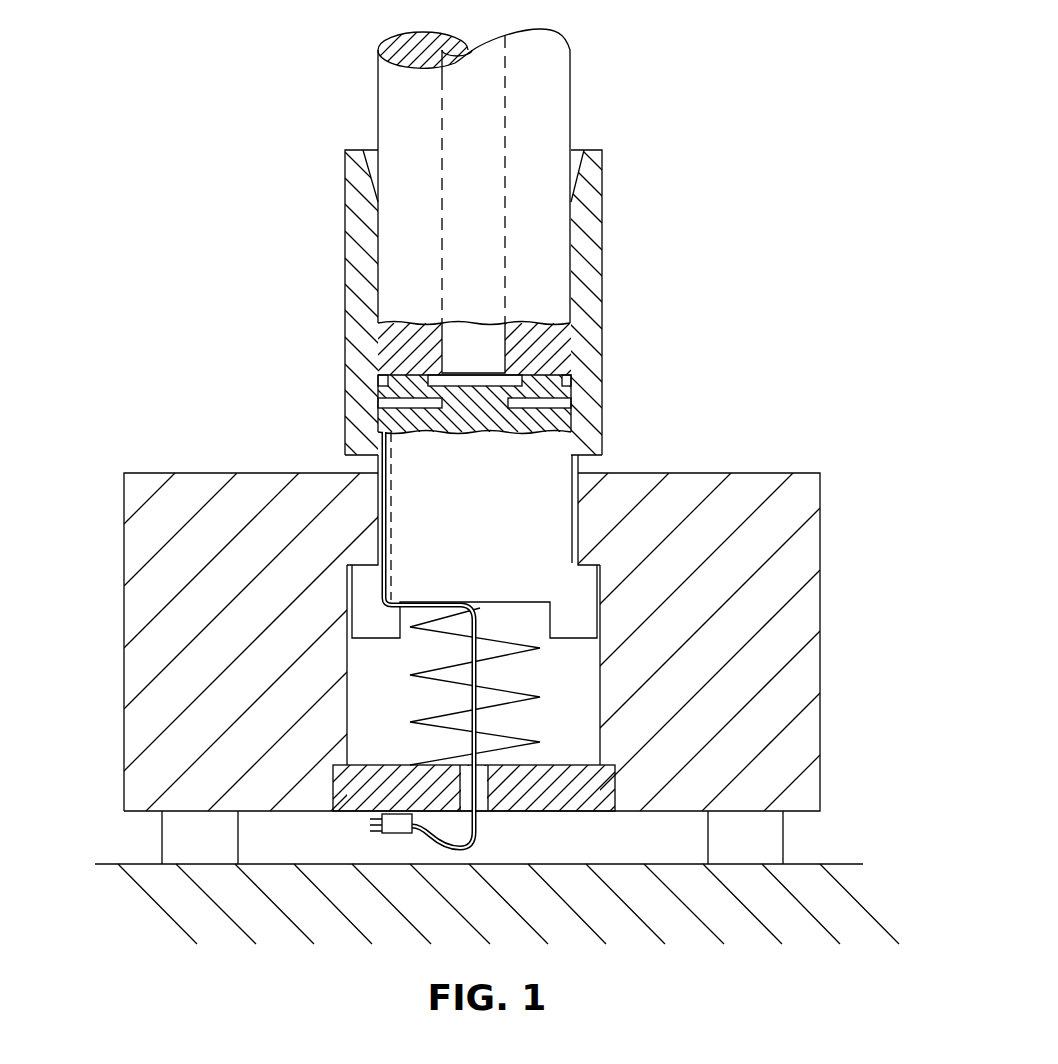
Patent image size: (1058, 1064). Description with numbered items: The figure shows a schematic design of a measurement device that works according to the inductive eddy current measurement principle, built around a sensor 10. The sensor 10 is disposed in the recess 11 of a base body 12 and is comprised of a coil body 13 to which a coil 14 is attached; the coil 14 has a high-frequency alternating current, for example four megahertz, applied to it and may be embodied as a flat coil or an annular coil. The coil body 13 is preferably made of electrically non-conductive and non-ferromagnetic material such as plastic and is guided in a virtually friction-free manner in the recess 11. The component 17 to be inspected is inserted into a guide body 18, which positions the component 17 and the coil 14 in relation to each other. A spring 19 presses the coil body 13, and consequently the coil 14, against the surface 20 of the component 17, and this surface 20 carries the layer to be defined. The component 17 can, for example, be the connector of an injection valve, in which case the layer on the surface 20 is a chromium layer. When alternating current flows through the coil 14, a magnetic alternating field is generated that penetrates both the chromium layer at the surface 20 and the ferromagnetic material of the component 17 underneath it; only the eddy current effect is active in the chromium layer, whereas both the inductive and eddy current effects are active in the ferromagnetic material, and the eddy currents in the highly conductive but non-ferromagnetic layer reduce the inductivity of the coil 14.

The sensor 10 is at (298, 425).
The recess 11 is at (580, 655).
The base body 12 is at (737, 497).
The coil body 13 is at (525, 497).
The coil 14 is at (570, 386).
The component 17 is at (548, 107).
The guide body 18 is at (590, 185).
The spring 19 is at (523, 688).
The surface 20 is at (532, 370).